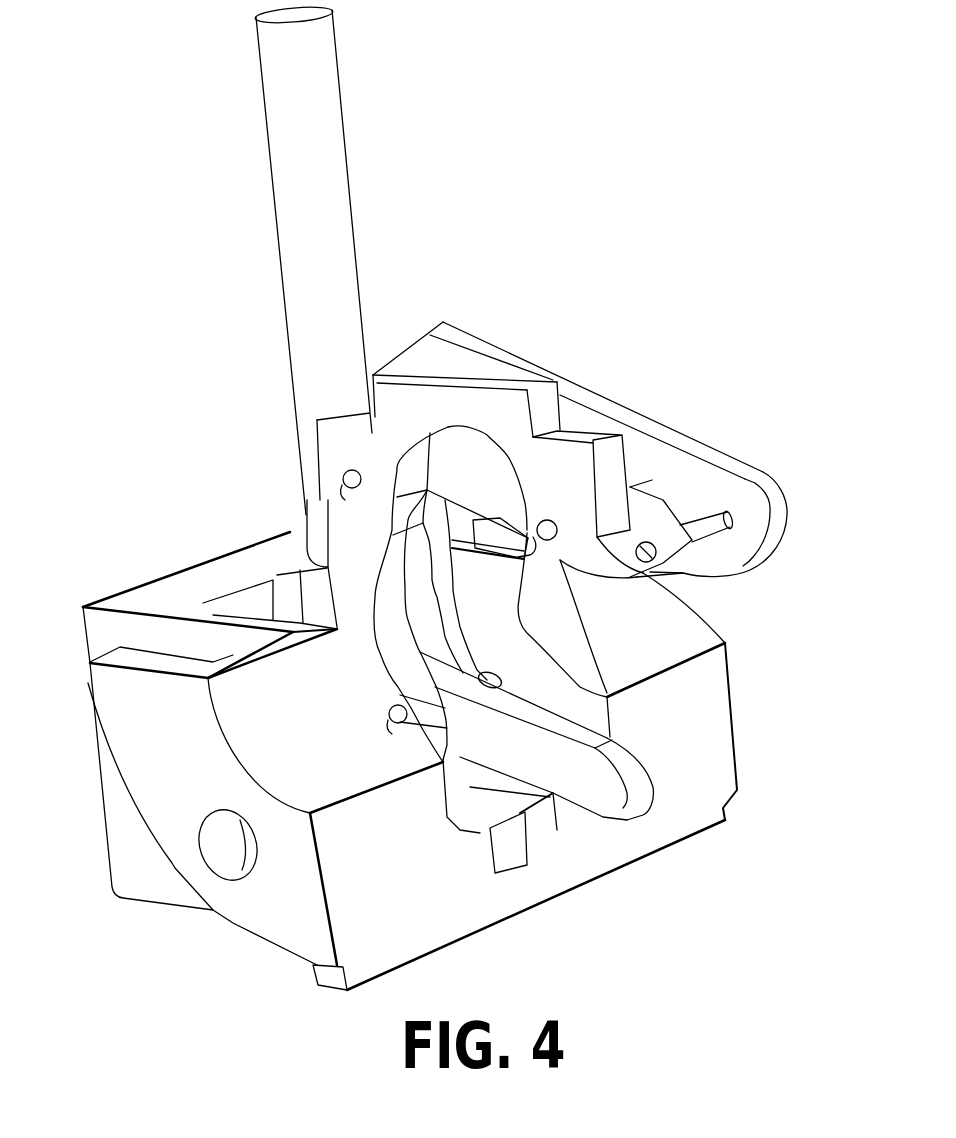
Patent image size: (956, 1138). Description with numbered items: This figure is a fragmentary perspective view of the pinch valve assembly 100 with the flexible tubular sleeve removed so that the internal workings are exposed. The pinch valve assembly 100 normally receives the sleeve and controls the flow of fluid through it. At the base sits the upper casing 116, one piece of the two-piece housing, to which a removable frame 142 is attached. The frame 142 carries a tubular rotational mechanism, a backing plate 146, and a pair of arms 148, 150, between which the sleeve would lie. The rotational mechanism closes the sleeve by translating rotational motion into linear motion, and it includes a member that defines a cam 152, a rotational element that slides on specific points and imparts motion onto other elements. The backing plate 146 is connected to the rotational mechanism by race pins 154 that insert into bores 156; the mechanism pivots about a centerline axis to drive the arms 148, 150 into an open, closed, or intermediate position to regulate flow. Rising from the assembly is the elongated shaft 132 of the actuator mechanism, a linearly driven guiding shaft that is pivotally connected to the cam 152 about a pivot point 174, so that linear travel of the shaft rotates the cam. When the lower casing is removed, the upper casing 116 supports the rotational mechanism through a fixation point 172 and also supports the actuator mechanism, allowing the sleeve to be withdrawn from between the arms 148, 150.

The pinch valve assembly 100 is at (618, 157).
The upper casing 116 is at (182, 595).
The elongated shaft 132 is at (312, 124).
The removable frame 142 is at (608, 354).
The backing plate 146 is at (588, 527).
The arm 148 is at (657, 553).
The arm 150 is at (602, 800).
The cam 152 is at (674, 452).
The race pins 154 is at (355, 490).
The bores 156 is at (342, 472).
The fixation point 172 is at (518, 837).
The pivot point 174 is at (305, 520).